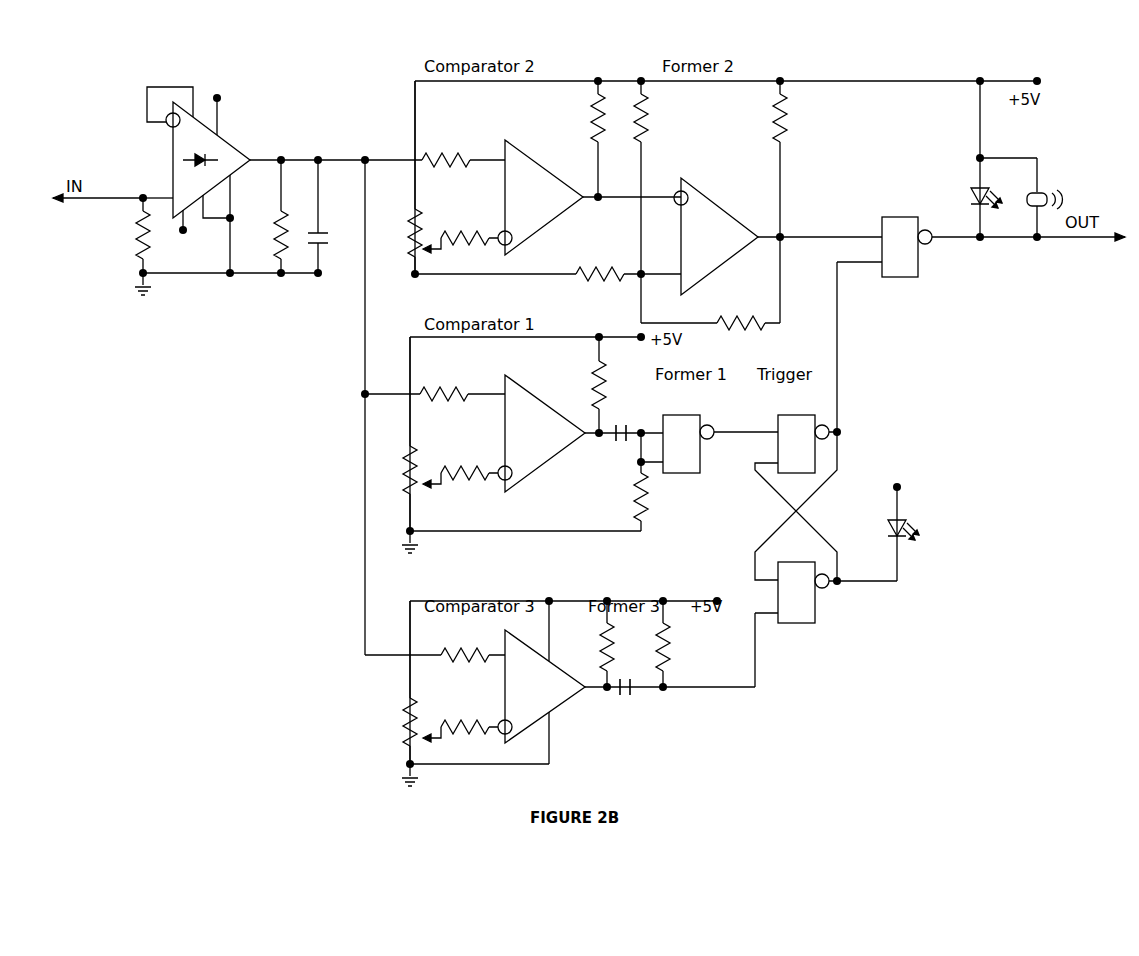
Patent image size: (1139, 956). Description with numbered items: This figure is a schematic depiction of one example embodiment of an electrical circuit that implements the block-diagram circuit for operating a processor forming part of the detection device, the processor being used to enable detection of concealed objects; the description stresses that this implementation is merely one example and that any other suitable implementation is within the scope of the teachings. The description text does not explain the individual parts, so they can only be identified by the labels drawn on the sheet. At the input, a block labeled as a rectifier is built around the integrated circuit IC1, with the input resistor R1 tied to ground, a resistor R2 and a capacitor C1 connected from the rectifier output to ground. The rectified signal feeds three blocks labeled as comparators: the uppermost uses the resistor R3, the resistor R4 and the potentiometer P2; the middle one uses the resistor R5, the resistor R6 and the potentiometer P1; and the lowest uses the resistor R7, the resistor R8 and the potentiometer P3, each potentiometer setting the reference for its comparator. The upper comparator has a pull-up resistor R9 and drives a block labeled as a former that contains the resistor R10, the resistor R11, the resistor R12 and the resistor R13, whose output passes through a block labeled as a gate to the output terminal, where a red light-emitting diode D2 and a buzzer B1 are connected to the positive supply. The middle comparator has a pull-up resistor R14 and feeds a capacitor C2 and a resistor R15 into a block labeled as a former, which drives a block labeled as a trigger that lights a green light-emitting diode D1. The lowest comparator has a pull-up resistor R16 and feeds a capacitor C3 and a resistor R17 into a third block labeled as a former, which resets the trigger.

The rectifier operational amplifier IC1 is at (244, 176).
The resistor 15k R1 is at (121, 235).
The resistor 15k R2 is at (264, 216).
The capacitor 1uF C1 is at (330, 216).
The resistor 15k R3 is at (435, 135).
The resistor 15k R4 is at (460, 218).
The potentiometer 10k P2 is at (397, 177).
The resistor 3k R9 is at (582, 139).
The resistor 1M R10 is at (658, 202).
The resistor 3M R11 is at (759, 202).
The resistor 1M R12 is at (548, 249).
The resistor 1M R13 is at (710, 303).
The red LED D2 is at (969, 159).
The buzzer B1 is at (1021, 185).
The resistor 15k R5 is at (435, 369).
The resistor 15k R6 is at (460, 452).
The potentiometer 10k P1 is at (392, 434).
The resistor 3k R14 is at (579, 385).
The capacitor 10n C2 is at (624, 407).
The resistor 1.2k R15 is at (659, 482).
The green LED D1 is at (870, 518).
The resistor 15k R7 is at (435, 640).
The resistor 15k R8 is at (460, 709).
The potentiometer 10k P3 is at (392, 682).
The resistor 3k R16 is at (587, 644).
The capacitor 10n C3 is at (627, 666).
The resistor 15k R17 is at (680, 644).